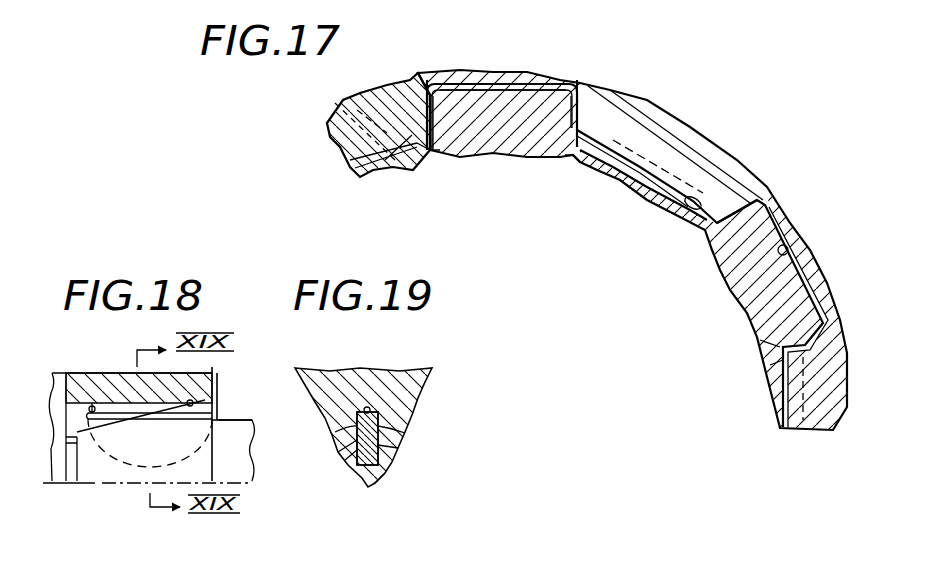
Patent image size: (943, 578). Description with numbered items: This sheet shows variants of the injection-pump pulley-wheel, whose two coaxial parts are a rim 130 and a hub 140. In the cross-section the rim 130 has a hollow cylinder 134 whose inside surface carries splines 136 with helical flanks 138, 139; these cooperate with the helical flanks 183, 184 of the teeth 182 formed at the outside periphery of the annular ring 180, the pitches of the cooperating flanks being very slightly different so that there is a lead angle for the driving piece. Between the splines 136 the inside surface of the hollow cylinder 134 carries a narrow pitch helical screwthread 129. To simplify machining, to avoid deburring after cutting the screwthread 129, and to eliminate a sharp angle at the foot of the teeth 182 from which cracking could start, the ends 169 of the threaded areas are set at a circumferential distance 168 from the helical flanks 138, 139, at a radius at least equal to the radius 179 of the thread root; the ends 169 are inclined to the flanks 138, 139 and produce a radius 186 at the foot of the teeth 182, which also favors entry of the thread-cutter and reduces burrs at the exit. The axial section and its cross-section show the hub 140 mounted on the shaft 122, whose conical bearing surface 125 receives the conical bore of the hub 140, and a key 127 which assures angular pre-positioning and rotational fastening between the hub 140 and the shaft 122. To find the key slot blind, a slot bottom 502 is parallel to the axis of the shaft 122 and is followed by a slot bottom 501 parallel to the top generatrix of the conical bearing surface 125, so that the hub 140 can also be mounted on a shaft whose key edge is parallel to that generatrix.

In FIG. 17, the rim 130 is at (749, 158).
In FIG. 17, the hollow cylinder 134 is at (698, 124).
In FIG. 17, the splines 136 is at (473, 93).
In FIG. 17, the helical flank 138 is at (443, 97).
In FIG. 17, the helical flank 139 is at (513, 100).
In FIG. 17, the circumferential distance 168 is at (445, 153).
In FIG. 17, the ends of the threaded areas 169 is at (423, 160).
In FIG. 17, the radius of the thread root 179 is at (357, 100).
In FIG. 17, the narrow pitch helical screwthread 129 is at (370, 157).
In FIG. 17, the annular ring 180 is at (572, 170).
In FIG. 17, the teeth 182 is at (517, 97).
In FIG. 17, the helical flank 183 is at (427, 80).
In FIG. 17, the helical flank 184 is at (580, 83).
In FIG. 17, the radius 186 is at (681, 210).
In FIG. 18, the hub 140 is at (64, 371).
In FIG. 19, the hub 140 is at (430, 377).
In FIG. 18, the slot bottom 502 is at (93, 403).
In FIG. 18, the slot bottom 501 is at (217, 374).
In FIG. 19, the slot bottom 501 is at (365, 408).
In FIG. 18, the key 127 is at (192, 406).
In FIG. 19, the key 127 is at (380, 428).
In FIG. 18, the conical bearing surface 125 is at (200, 467).
In FIG. 19, the conical bearing surface 125 is at (392, 446).
In FIG. 18, the shaft 122 is at (256, 468).
In FIG. 19, the shaft 122 is at (390, 472).